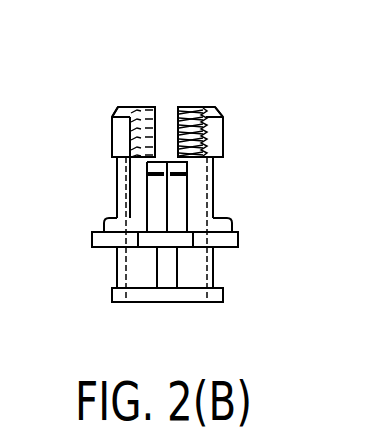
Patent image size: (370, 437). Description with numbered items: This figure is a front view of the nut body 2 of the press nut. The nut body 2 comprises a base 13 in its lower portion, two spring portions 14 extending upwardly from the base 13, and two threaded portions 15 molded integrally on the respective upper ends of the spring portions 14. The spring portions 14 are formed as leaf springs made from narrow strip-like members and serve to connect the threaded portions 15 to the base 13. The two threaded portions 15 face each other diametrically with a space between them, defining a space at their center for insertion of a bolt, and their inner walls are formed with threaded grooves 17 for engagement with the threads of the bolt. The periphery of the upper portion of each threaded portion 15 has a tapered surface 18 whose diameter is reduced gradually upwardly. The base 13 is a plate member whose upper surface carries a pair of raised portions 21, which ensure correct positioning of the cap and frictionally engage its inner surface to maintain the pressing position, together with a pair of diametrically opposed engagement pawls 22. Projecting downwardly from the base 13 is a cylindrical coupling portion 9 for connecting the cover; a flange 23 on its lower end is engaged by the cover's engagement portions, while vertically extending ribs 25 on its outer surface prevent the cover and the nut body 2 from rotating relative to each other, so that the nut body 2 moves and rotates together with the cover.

The nut body 2 is at (204, 83).
The coupling portion 9 is at (197, 273).
The base 13 is at (232, 242).
The spring portions 14 is at (123, 180).
The threaded portions 15 is at (118, 140).
The threaded grooves 17 is at (191, 109).
The tapered surface 18 is at (112, 115).
The raised portions 21 is at (112, 222).
The engagement pawls 22 is at (153, 198).
The flange 23 is at (215, 303).
The ribs 25 is at (165, 260).